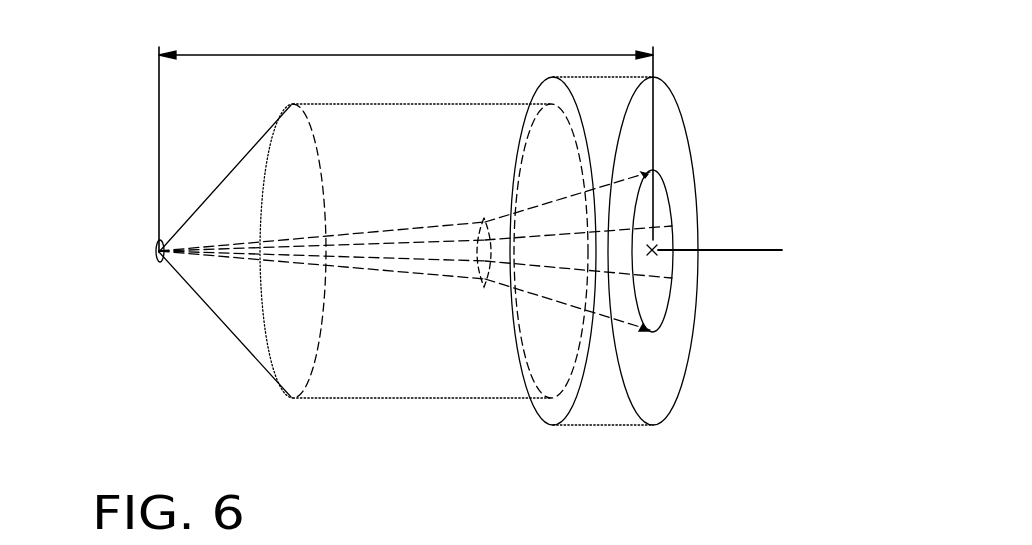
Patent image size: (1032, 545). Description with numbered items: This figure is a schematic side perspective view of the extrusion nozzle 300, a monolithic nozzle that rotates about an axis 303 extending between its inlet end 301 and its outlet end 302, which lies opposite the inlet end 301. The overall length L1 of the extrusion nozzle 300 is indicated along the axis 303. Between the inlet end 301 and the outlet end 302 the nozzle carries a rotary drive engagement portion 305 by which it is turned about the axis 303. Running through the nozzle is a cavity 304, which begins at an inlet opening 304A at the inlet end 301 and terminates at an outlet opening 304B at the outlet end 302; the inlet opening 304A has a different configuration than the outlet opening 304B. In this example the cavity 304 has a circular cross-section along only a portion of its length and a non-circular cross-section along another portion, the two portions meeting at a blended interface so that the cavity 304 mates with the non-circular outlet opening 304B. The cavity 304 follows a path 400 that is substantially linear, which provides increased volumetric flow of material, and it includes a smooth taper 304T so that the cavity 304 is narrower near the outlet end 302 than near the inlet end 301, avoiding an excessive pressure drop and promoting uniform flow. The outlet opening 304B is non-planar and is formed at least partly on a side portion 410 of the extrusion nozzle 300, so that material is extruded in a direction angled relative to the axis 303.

The length of the extrusion nozzle L1 is at (408, 54).
The extrusion nozzle 300 is at (440, 102).
The inlet end 301 is at (675, 153).
The outlet end 302 is at (150, 226).
The axis 303 is at (733, 250).
The cavity 304 is at (432, 218).
The inlet opening 304A is at (654, 253).
The outlet opening 304B is at (156, 251).
The taper 304T is at (290, 270).
The rotary drive engagement portion 305 is at (604, 417).
The path 400 is at (452, 272).
The side portion 410 is at (352, 367).